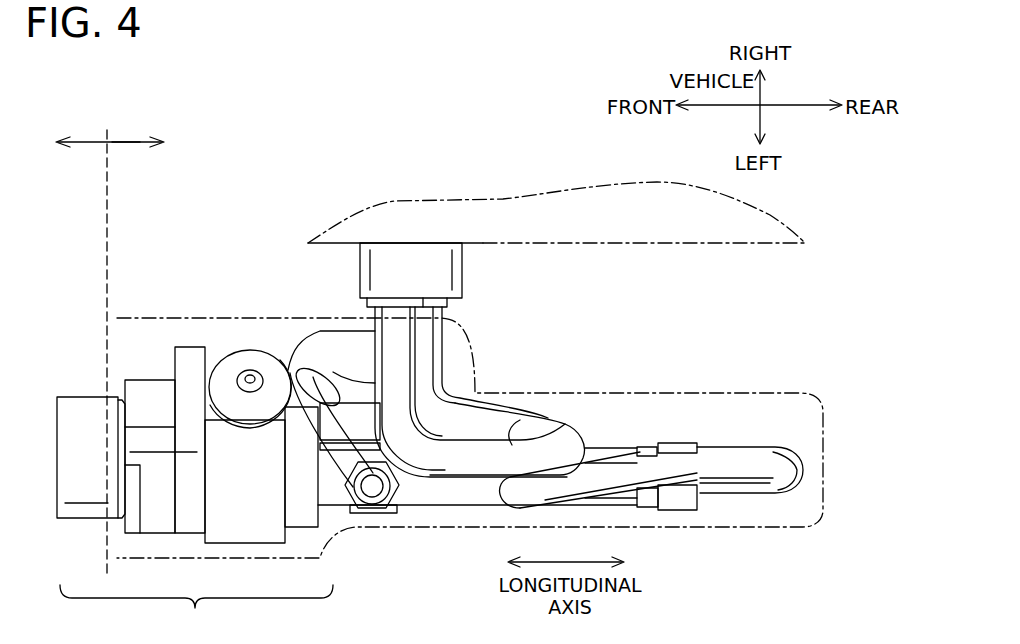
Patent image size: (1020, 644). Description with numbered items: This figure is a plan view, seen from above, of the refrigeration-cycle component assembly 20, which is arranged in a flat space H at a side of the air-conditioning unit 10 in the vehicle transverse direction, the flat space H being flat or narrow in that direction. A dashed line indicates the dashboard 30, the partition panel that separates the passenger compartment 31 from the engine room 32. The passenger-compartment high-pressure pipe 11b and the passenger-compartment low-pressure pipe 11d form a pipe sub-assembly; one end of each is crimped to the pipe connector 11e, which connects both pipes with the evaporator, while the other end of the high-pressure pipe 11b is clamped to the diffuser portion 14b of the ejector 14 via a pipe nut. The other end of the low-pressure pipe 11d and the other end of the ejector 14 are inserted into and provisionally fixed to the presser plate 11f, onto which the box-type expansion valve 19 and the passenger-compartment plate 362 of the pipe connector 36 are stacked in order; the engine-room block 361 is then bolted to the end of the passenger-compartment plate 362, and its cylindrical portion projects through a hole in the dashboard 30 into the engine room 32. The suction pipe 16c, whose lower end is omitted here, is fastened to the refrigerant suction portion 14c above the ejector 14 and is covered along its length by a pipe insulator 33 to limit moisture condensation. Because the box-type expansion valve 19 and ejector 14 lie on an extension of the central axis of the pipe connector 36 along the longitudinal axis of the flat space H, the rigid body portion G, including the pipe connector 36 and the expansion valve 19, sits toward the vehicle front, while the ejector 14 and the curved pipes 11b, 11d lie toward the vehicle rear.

The air-conditioning unit 10 is at (518, 208).
The passenger-compartment high-pressure pipe 11b is at (785, 455).
The passenger-compartment low-pressure pipe 11d is at (520, 432).
The pipe connector 11e is at (445, 272).
The presser plate 11f is at (300, 377).
The ejector 14 is at (453, 493).
The diffuser portion 14b is at (645, 497).
The refrigerant suction portion 14c is at (372, 495).
The suction pipe 16c is at (347, 507).
The box-type expansion valve 19 is at (243, 357).
The refrigeration-cycle component assembly 20 is at (213, 247).
The dashboard 30 is at (109, 338).
The passenger compartment 31 is at (152, 143).
The engine room 32 is at (83, 143).
The pipe insulator 33 is at (330, 357).
The pipe connector 36 is at (158, 388).
The engine-room block 361 is at (140, 400).
The passenger-compartment plate 362 is at (187, 350).
The rigid body portion G is at (196, 613).
The flat space H is at (710, 530).